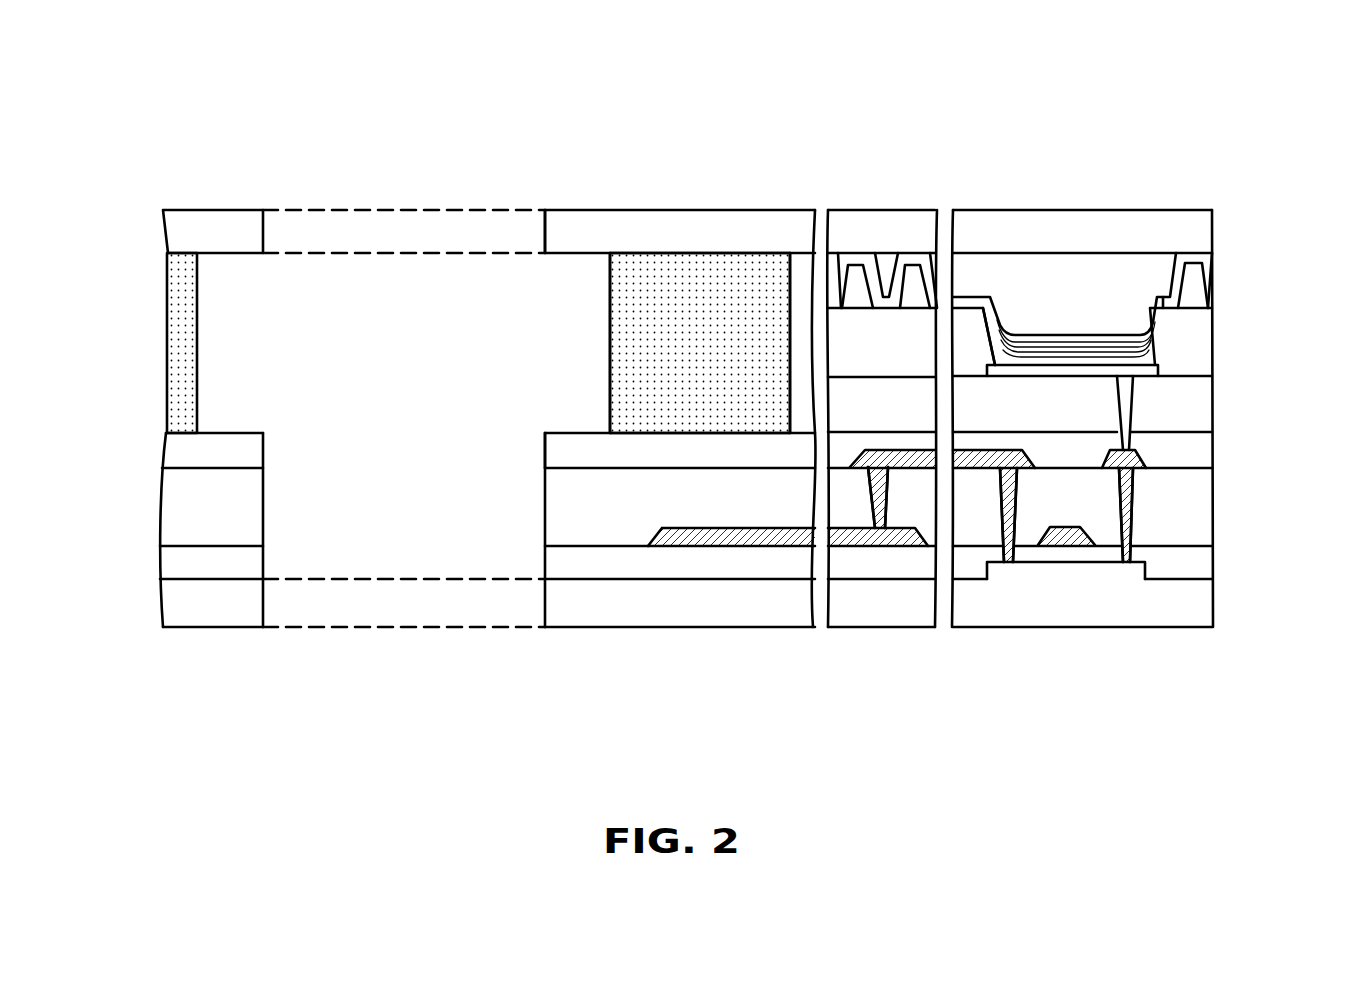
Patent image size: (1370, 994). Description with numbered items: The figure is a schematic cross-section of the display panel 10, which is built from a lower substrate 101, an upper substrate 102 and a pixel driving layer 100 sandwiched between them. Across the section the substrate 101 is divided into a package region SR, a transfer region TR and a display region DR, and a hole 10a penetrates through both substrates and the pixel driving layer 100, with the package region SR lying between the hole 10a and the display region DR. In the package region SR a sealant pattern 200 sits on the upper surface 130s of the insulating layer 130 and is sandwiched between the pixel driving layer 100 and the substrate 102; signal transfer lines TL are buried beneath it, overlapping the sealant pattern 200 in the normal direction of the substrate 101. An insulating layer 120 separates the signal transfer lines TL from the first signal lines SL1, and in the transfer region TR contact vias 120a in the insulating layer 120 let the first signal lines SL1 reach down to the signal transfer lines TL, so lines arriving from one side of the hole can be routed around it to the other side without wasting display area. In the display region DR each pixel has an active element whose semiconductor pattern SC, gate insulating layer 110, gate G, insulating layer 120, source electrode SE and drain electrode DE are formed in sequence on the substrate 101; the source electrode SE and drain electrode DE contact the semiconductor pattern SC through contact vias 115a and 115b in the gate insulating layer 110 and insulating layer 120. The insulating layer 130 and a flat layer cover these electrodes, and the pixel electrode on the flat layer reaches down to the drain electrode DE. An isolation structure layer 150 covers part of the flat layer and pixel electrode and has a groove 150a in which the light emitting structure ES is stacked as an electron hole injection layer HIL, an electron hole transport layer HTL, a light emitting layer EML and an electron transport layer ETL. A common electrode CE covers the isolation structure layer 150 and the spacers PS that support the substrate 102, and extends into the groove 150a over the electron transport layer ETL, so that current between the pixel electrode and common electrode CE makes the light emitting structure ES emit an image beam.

The display panel 10 is at (717, 403).
The hole 10a is at (536, 243).
The pixel driving layer 100 is at (152, 433).
The substrate 101 is at (1193, 613).
The substrate 102 is at (1190, 232).
The gate insulating layer 110 is at (1193, 565).
The insulating layer 120 is at (1193, 512).
The contact vias 120a is at (874, 486).
The insulating layer 130 is at (1193, 453).
The upper surface 130s is at (585, 420).
The isolation structure layer 150 is at (1193, 332).
The groove 150a is at (1001, 316).
The sealant pattern 200 is at (181, 336).
The contact vias 115a is at (1004, 495).
The contact vias 115b is at (1128, 495).
The package region SR is at (251, 58).
The transfer region TR is at (923, 58).
The display region DR is at (1201, 58).
The spacers PS is at (910, 282).
The common electrode CE is at (955, 250).
The light emitting structure ES is at (1087, 222).
The electron hole injection layer HIL is at (1072, 248).
The electron hole transport layer HTL is at (1036, 358).
The light emitting layer EML is at (1089, 351).
The electron transport layer ETL is at (1127, 345).
The signal transfer lines TL is at (692, 538).
The first signal lines SL1 is at (910, 460).
The source electrode SE is at (1008, 554).
The semiconductor pattern SC is at (1158, 688).
The gate G is at (1073, 542).
The drain electrode DE is at (1123, 554).